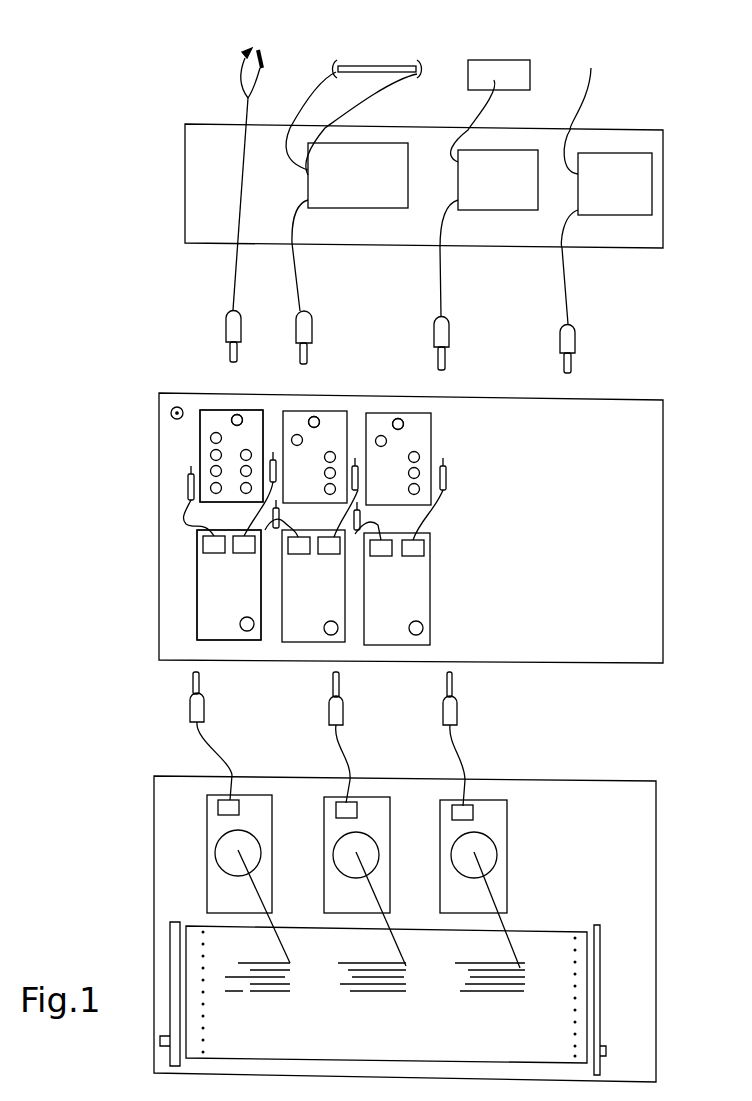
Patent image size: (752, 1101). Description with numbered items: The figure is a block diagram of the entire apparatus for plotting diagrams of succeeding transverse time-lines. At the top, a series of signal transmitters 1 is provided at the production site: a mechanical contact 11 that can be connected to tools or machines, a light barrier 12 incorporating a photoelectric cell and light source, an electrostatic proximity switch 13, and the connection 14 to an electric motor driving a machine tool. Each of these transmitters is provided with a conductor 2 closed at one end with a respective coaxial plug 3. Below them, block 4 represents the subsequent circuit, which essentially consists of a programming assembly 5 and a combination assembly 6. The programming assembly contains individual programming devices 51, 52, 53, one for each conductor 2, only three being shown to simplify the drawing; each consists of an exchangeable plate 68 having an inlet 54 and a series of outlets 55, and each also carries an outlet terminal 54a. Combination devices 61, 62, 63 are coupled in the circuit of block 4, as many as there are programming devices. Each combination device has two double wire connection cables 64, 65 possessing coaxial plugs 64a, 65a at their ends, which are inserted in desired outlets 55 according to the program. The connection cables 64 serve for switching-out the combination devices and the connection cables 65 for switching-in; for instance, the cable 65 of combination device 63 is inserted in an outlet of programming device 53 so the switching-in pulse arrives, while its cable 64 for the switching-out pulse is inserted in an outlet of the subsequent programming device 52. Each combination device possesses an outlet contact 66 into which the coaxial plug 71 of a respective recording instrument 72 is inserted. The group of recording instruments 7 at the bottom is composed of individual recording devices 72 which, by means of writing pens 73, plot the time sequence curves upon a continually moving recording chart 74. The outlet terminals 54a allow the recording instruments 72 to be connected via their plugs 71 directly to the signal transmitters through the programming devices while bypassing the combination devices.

The series of signal transmitters 1 is at (156, 170).
The conductor 2 is at (240, 274).
The coaxial plug 3 is at (241, 326).
The block 4 is at (52, 520).
The programming assembly 5 is at (187, 456).
The combination assembly 6 is at (186, 585).
The group of recording instruments 7 is at (110, 870).
The mechanical contact 11 is at (237, 165).
The light barrier 12 is at (354, 99).
The electrostatic proximity switch 13 is at (505, 86).
The connection to an electric motor 14 is at (630, 109).
The programming device 51 is at (210, 412).
The programming device 52 is at (340, 412).
The programming device 53 is at (426, 413).
The inlet 54 is at (240, 415).
The outlet terminal 54a is at (222, 438).
The outlets 55 is at (210, 487).
The combination device 61 is at (229, 585).
The combination device 62 is at (313, 586).
The combination device 63 is at (397, 589).
The connection cable 64 is at (196, 510).
The coaxial plug 64a is at (186, 482).
The connection cable 65 is at (252, 522).
The coaxial plug 65a is at (273, 452).
The outlet contact 66 is at (248, 631).
The plate 68 is at (177, 407).
The coaxial plug 71 is at (203, 716).
The recording instrument 72 is at (357, 854).
The writing pen 73 is at (270, 922).
The recording chart 74 is at (383, 998).